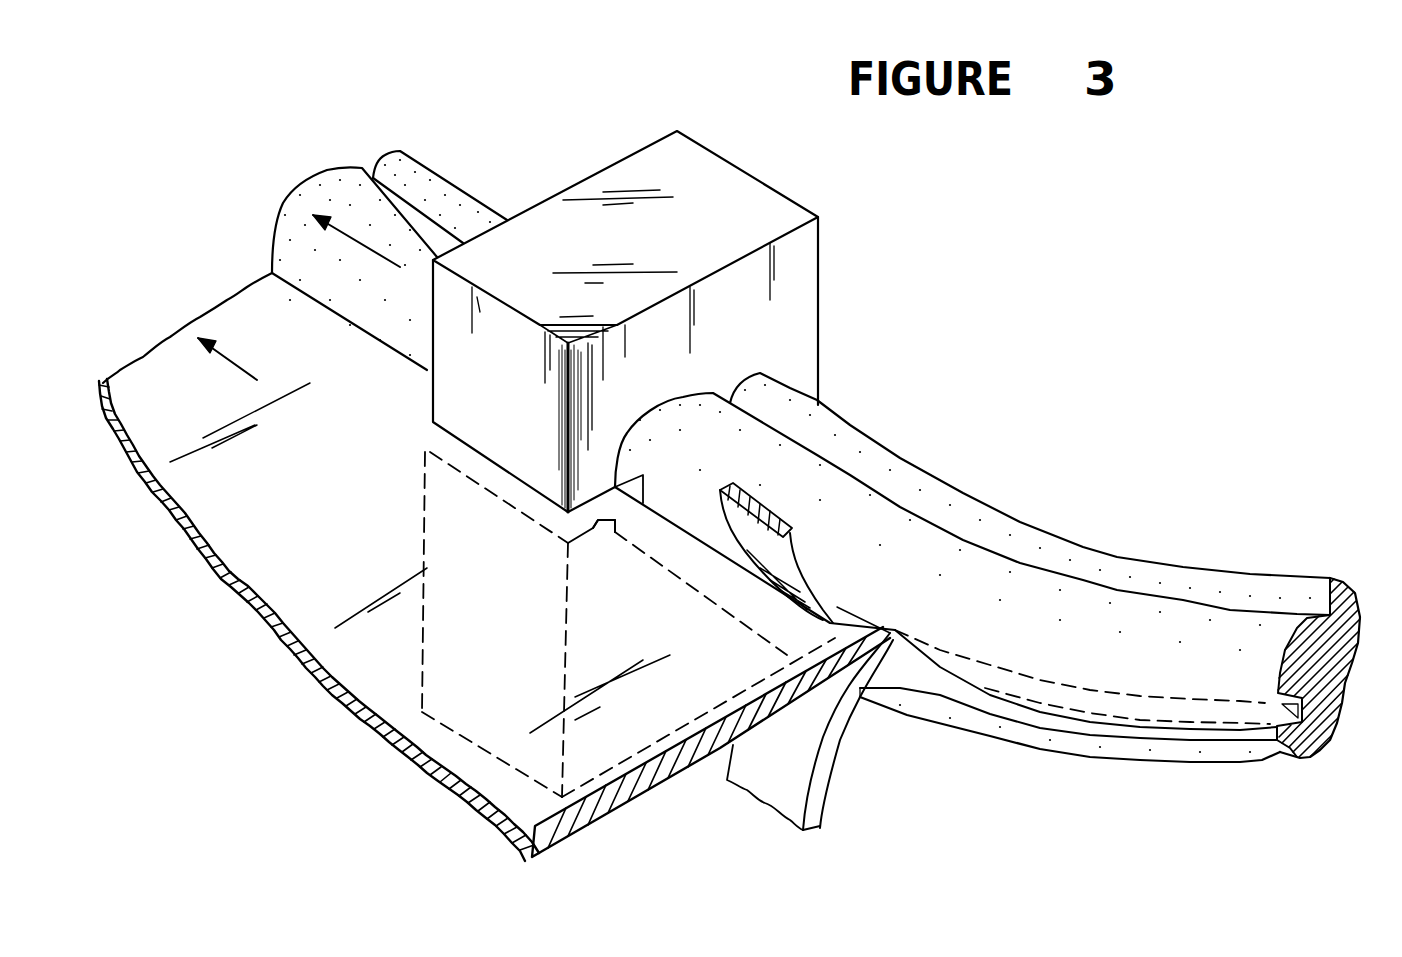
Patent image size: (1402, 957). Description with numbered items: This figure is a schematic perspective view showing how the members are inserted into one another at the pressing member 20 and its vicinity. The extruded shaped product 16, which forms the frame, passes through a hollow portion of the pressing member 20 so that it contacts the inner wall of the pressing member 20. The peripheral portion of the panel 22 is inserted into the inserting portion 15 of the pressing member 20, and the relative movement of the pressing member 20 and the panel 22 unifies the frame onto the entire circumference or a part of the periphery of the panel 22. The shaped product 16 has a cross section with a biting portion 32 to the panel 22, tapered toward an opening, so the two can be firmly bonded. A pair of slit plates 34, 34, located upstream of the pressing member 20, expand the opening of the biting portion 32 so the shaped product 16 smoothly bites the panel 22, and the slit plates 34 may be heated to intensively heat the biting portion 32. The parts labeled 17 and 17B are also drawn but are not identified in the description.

The inserting portion 15 is at (597, 513).
The shaped product 16 is at (1150, 651).
The sheet material 17 is at (462, 188).
The rounded bead of sheet 17B is at (475, 222).
The pressing member 20 is at (728, 197).
The panel 22 is at (497, 775).
The biting portion 32 is at (1132, 735).
The slit plates 34 is at (835, 615).